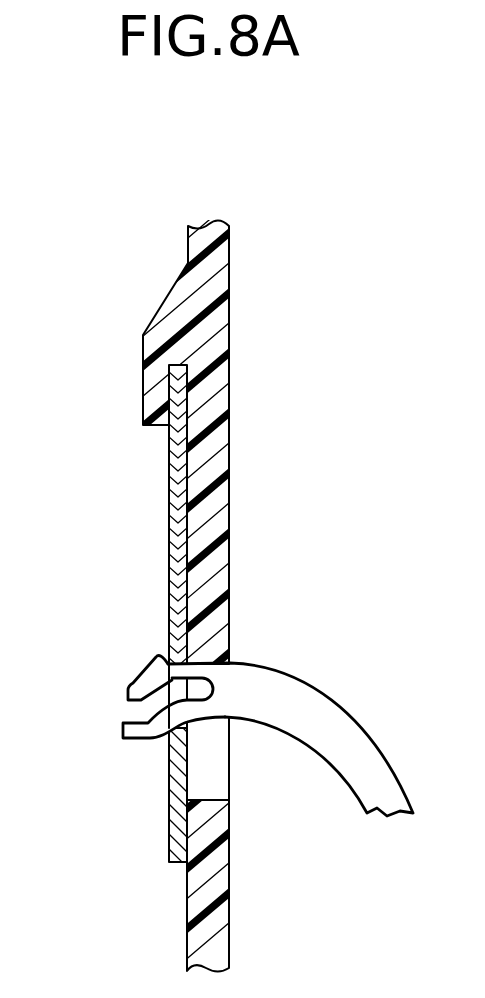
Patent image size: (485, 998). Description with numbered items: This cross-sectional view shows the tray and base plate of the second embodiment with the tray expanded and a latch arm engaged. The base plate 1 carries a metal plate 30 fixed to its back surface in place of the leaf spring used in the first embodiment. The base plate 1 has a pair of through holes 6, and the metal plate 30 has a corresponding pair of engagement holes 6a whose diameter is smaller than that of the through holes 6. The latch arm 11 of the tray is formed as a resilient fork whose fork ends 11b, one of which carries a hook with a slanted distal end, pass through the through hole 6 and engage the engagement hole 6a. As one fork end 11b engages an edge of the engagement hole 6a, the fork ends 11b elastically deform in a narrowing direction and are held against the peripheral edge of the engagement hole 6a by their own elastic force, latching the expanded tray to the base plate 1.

The base plate 1 is at (218, 493).
The metal plate 30 is at (172, 538).
The latch arm 11 is at (348, 720).
The fork end 11b is at (143, 677).
The through hole 6 is at (217, 763).
The engagement hole 6a is at (180, 699).